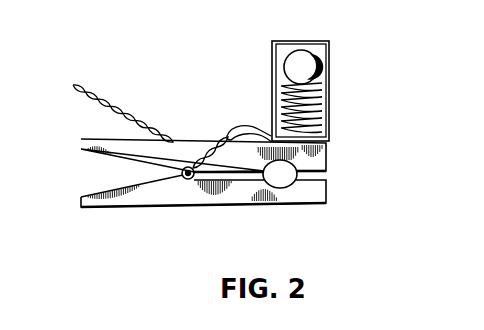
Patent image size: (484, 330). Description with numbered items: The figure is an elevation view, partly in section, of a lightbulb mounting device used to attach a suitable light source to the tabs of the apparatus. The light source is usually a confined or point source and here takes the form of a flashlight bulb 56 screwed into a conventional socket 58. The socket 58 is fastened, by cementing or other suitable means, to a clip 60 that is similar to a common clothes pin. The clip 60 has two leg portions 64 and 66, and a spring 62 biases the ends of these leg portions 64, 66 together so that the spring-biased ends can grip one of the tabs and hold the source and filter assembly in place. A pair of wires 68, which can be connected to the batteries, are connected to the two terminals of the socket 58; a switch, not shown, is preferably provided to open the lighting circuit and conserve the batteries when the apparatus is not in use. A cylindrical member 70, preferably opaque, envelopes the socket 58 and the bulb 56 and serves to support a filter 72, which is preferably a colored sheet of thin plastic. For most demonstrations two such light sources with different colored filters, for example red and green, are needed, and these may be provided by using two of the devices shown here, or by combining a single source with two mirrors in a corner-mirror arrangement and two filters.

The bulb 56 is at (320, 68).
The socket 58 is at (322, 120).
The clip 60 is at (289, 208).
The spring 62 is at (187, 179).
The leg portion 64 is at (188, 142).
The leg portion 66 is at (233, 203).
The wires 68 is at (100, 93).
The cylindrical member 70 is at (275, 53).
The filter 72 is at (310, 41).